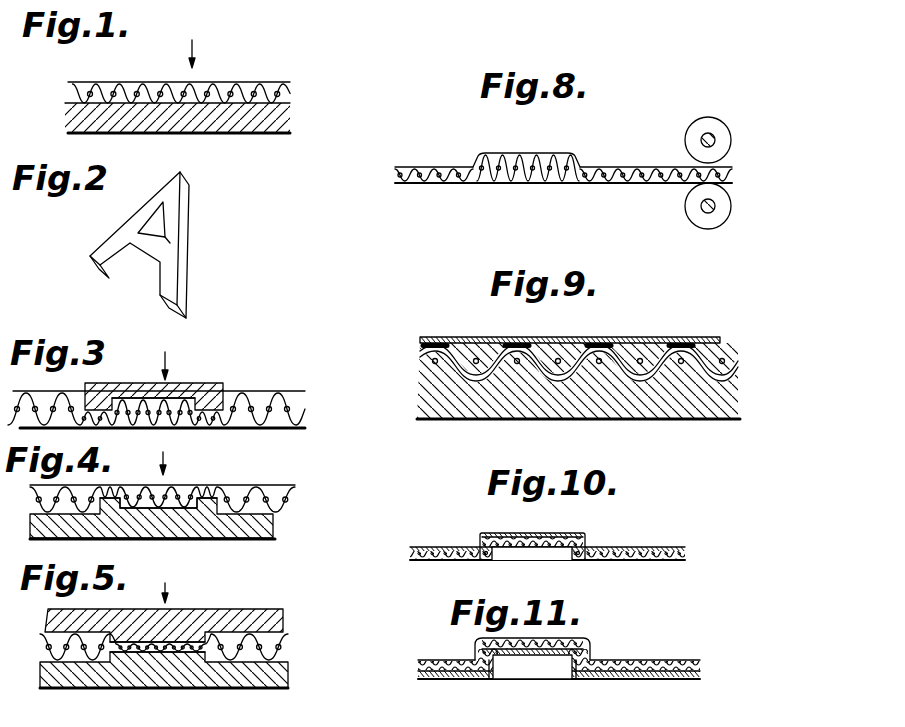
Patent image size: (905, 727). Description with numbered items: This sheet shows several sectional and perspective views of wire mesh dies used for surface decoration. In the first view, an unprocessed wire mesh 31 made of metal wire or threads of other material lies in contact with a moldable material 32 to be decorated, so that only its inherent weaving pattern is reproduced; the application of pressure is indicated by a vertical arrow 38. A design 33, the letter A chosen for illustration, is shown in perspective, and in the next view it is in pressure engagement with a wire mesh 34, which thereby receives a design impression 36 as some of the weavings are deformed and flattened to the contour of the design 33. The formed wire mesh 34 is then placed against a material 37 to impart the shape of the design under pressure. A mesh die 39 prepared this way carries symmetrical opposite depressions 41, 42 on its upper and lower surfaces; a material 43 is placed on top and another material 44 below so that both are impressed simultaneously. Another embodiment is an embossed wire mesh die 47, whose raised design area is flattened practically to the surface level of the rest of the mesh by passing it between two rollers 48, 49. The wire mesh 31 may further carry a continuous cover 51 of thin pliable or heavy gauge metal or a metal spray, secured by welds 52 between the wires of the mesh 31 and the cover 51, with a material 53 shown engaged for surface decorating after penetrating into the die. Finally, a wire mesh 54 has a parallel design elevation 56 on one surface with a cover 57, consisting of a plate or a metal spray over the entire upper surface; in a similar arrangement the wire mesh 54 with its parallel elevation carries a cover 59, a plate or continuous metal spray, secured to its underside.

In FIG. 1, the wire mesh 31 is at (140, 92).
In FIG. 9, the wire mesh 31 is at (720, 358).
In FIG. 1, the moldable material 32 is at (278, 119).
In FIG. 2, the design 33 is at (174, 279).
In FIG. 3, the design 33 is at (212, 387).
In FIG. 3, the wire mesh 34 is at (302, 410).
In FIG. 4, the wire mesh 34 is at (283, 497).
In FIG. 3, the design impression 36 is at (162, 401).
In FIG. 4, the design impression 36 is at (195, 505).
In FIG. 4, the material 37 is at (270, 530).
In FIG. 1, the vertical arrow 38 is at (195, 43).
In FIG. 3, the vertical arrow 38 is at (163, 364).
In FIG. 4, the vertical arrow 38 is at (167, 465).
In FIG. 5, the vertical arrow 38 is at (167, 588).
In FIG. 5, the mesh die 39 is at (288, 647).
In FIG. 5, the depression 41 is at (198, 640).
In FIG. 5, the depression 42 is at (193, 657).
In FIG. 5, the material 43 is at (283, 623).
In FIG. 5, the material 44 is at (283, 677).
In FIG. 8, the embossed wire mesh die 47 is at (426, 183).
In FIG. 8, the roller 48 is at (723, 141).
In FIG. 8, the roller 49 is at (715, 215).
In FIG. 9, the continuous cover 51 is at (522, 338).
In FIG. 9, the weld 52 is at (613, 323).
In FIG. 9, the material 53 is at (510, 400).
In FIG. 10, the wire mesh 54 is at (474, 560).
In FIG. 11, the wire mesh 54 is at (577, 640).
In FIG. 10, the parallel design elevation 56 is at (556, 533).
In FIG. 10, the cover 57 is at (513, 533).
In FIG. 11, the cover 59 is at (563, 656).